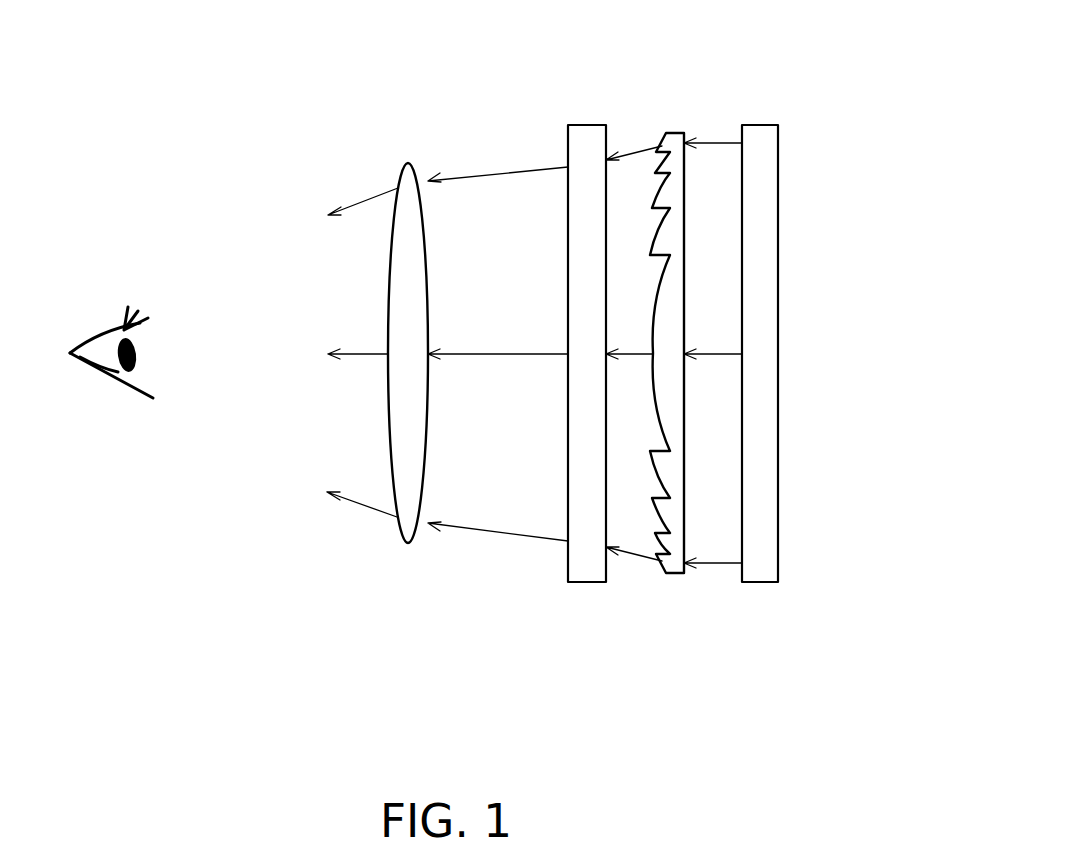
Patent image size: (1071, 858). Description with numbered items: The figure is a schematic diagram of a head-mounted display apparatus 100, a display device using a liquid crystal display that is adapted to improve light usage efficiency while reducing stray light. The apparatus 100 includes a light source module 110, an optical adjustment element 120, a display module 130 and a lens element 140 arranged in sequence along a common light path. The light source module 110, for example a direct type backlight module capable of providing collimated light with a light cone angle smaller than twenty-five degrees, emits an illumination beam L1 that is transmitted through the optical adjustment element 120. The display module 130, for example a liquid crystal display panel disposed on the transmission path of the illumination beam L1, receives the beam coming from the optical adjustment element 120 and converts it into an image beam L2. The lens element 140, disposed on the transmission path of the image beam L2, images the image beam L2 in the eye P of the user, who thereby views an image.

The head-mounted display apparatus 100 is at (770, 77).
The light source module 110 is at (762, 573).
The optical adjustment element 120 is at (675, 574).
The display module 130 is at (585, 573).
The lens element 140 is at (405, 533).
The illumination beam L1 is at (640, 148).
The image beam L2 is at (505, 168).
The eye P is at (106, 368).